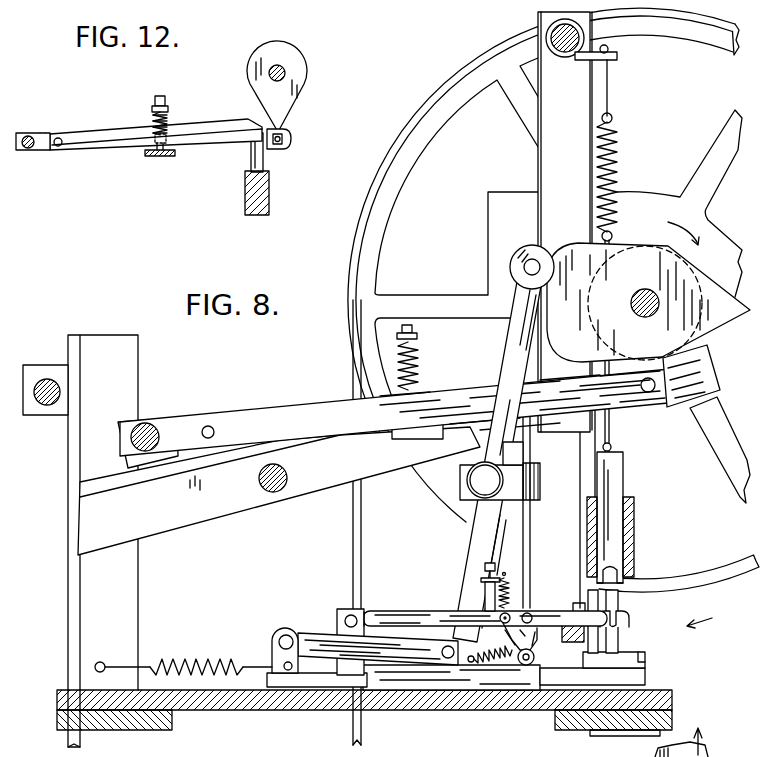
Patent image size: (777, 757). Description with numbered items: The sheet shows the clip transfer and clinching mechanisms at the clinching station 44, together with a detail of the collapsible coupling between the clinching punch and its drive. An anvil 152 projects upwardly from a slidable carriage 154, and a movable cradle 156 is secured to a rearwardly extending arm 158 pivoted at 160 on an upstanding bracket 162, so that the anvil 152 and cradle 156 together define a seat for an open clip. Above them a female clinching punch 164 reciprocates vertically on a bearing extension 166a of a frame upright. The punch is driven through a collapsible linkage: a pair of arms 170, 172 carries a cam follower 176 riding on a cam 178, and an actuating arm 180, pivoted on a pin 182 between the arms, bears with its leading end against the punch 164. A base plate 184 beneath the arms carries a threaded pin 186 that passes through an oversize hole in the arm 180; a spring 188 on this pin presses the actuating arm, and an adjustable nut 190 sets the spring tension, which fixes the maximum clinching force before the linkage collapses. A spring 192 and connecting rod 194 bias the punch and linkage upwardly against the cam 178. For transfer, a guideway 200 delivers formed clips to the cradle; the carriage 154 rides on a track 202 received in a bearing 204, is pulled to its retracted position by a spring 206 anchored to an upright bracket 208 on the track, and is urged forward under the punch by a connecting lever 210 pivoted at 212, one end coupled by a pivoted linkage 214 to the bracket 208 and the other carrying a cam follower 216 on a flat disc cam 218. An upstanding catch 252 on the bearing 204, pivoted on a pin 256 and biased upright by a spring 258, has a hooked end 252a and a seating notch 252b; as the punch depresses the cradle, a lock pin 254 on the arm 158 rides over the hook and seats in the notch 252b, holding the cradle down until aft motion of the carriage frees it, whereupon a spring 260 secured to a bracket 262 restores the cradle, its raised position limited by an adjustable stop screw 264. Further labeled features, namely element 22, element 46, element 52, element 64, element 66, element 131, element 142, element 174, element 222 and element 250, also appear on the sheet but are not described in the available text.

In FIG. 8, the pivot 22 is at (526, 635).
In FIG. 8, the clinching station 44 is at (709, 615).
In FIG. 8, the base 46 is at (230, 711).
In FIG. 12, the shaft 52 is at (286, 75).
In FIG. 8, the shaft 52 is at (659, 304).
In FIG. 8, the wheel 64 is at (352, 262).
In FIG. 8, the frame post 66 is at (353, 518).
In FIG. 8, the lower lever arm 131 is at (288, 477).
In FIG. 8, the frame bracket 142 is at (45, 405).
In FIG. 8, the anvil 152 is at (619, 640).
In FIG. 8, the slidable carriage 154 is at (646, 663).
In FIG. 8, the movable cradle 156 is at (630, 617).
In FIG. 8, the rearwardly extending arm 158 is at (405, 612).
In FIG. 8, the pivot 160 is at (348, 610).
In FIG. 8, the upstanding bracket 162 is at (336, 616).
In FIG. 12, the female clinching punch 164 is at (253, 160).
In FIG. 8, the female clinching punch 164 is at (625, 494).
In FIG. 12, the bearing extension 166a is at (270, 200).
In FIG. 8, the bearing extension 166a is at (636, 524).
In FIG. 12, the arm 170 is at (42, 149).
In FIG. 8, the arm 170 is at (276, 416).
In FIG. 12, the arm 172 is at (133, 149).
In FIG. 12, the pivot pin 174 is at (28, 150).
In FIG. 8, the pivot pin 174 is at (150, 423).
In FIG. 12, the cam follower 176 is at (292, 140).
In FIG. 8, the cam follower 176 is at (660, 410).
In FIG. 12, the cam 178 is at (292, 106).
In FIG. 8, the cam 178 is at (705, 278).
In FIG. 12, the actuating arm 180 is at (105, 130).
In FIG. 12, the pin 182 is at (61, 138).
In FIG. 8, the pin 182 is at (211, 426).
In FIG. 12, the base plate 184 is at (170, 158).
In FIG. 8, the base plate 184 is at (403, 440).
In FIG. 12, the pin 186 is at (167, 148).
In FIG. 12, the spring 188 is at (168, 116).
In FIG. 8, the spring 188 is at (418, 360).
In FIG. 12, the adjustable nut 190 is at (167, 99).
In FIG. 8, the adjustable nut 190 is at (414, 333).
In FIG. 8, the spring 192 is at (618, 150).
In FIG. 8, the connecting rod 194 is at (640, 248).
In FIG. 8, the guideway 200 is at (571, 639).
In FIG. 8, the track 202 is at (312, 688).
In FIG. 8, the bearing 204 is at (486, 692).
In FIG. 8, the spring 206 is at (200, 660).
In FIG. 8, the upright bracket 208 is at (282, 633).
In FIG. 8, the connecting lever 210 is at (470, 545).
In FIG. 8, the pivot 212 is at (495, 478).
In FIG. 8, the pivoted linkage 214 is at (410, 652).
In FIG. 8, the cam follower 216 is at (509, 263).
In FIG. 8, the flat disc cam 218 is at (576, 252).
In FIG. 8, the latch 222 is at (574, 602).
In FIG. 8, the pin 250 is at (527, 612).
In FIG. 8, the upstanding catch 252 is at (537, 627).
In FIG. 8, the hooked end 252a is at (508, 637).
In FIG. 8, the seating notch 252b is at (547, 639).
In FIG. 8, the lock pin 254 is at (531, 592).
In FIG. 8, the pin 256 is at (534, 654).
In FIG. 8, the spring 258 is at (495, 662).
In FIG. 8, the spring 260 is at (506, 590).
In FIG. 8, the bracket 262 is at (486, 580).
In FIG. 8, the adjustable stop screw 264 is at (486, 602).